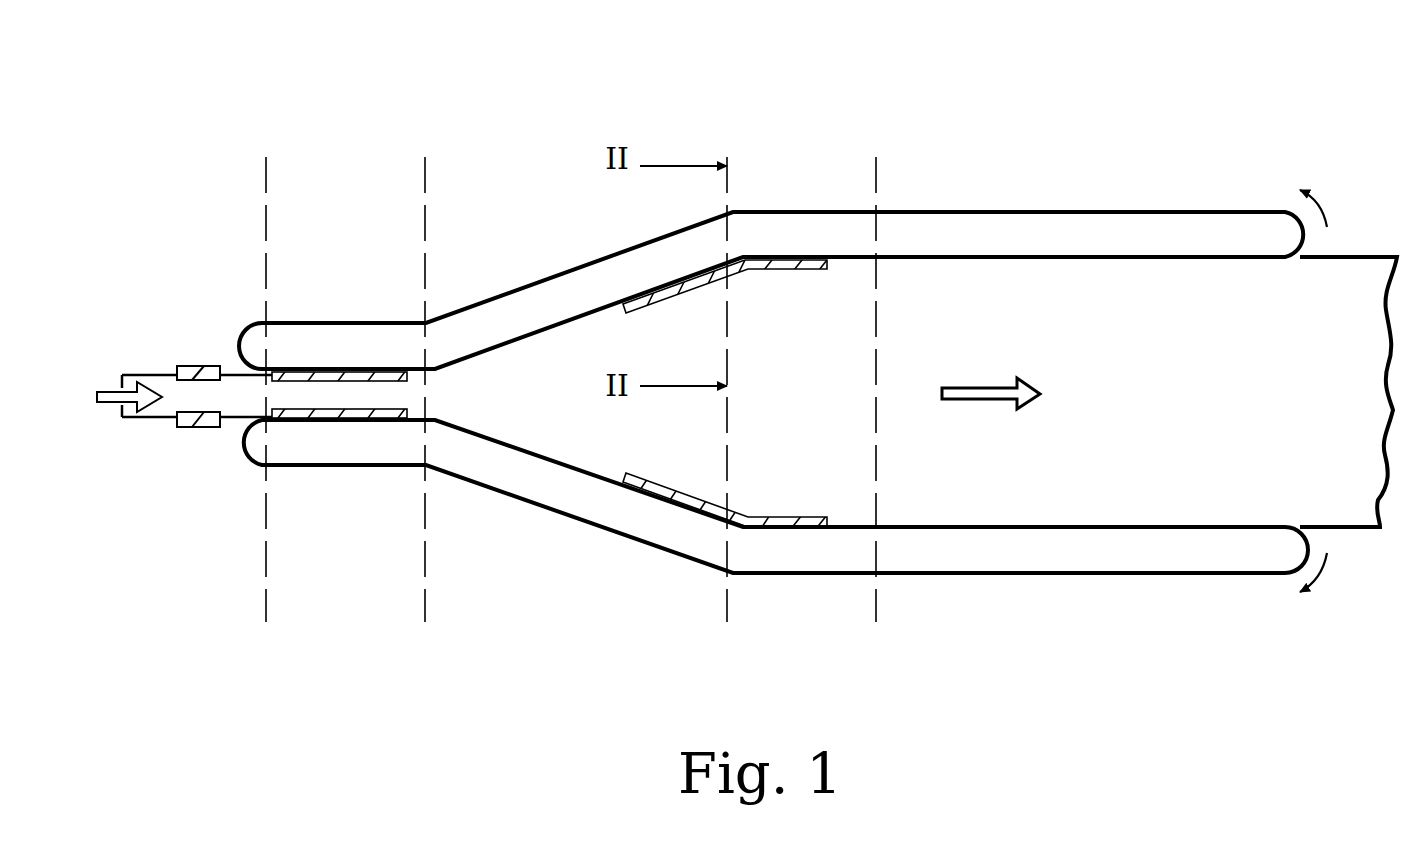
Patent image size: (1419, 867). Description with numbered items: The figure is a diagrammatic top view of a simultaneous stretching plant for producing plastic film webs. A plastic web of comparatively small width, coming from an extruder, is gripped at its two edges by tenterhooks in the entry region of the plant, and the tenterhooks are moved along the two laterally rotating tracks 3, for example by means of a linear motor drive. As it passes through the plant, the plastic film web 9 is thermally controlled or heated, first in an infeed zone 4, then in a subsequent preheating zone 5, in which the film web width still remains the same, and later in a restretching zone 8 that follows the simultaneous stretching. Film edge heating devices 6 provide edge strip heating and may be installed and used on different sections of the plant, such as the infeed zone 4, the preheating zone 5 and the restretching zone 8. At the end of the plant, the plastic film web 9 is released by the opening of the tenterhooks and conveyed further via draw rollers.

The laterally rotating tracks 3 is at (988, 255).
The infeed zone 4 is at (195, 343).
The preheating zone 5 is at (318, 358).
The film edge heating devices 6 is at (192, 372).
The restretching zone 8 is at (807, 187).
The plastic film web 9 is at (1360, 282).